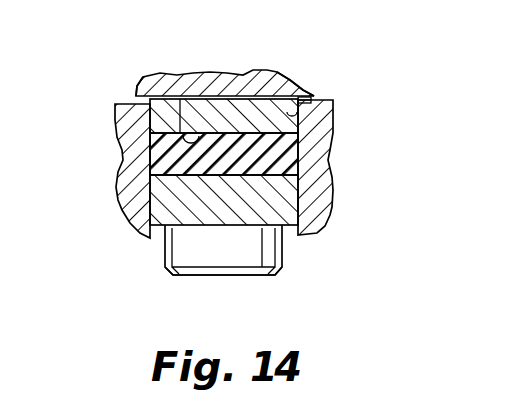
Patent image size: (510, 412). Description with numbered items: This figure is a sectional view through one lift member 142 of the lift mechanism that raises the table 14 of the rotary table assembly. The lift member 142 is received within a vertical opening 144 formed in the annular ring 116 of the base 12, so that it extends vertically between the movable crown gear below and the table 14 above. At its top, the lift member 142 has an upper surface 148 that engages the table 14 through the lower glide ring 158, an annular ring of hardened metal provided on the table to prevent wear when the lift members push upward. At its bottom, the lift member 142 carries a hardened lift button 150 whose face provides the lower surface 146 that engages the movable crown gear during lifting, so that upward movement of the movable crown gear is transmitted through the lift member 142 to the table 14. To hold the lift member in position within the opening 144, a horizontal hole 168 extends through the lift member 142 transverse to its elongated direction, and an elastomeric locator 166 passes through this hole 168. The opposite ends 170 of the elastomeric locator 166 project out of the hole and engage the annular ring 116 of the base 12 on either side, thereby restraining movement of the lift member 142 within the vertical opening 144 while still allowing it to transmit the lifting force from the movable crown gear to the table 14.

The base 12 is at (348, 128).
The table 14 is at (307, 96).
The annular ring 116 is at (120, 126).
The lift member 142 is at (150, 90).
The vertical opening 144 is at (332, 102).
The lower surface 146 is at (270, 273).
The upper surface 148 is at (247, 96).
The lift button 150 is at (195, 248).
The lower glide ring 158 is at (208, 77).
The elastomeric locator 166 is at (140, 212).
The horizontal hole 168 is at (178, 98).
The opposite ends 170 is at (122, 162).